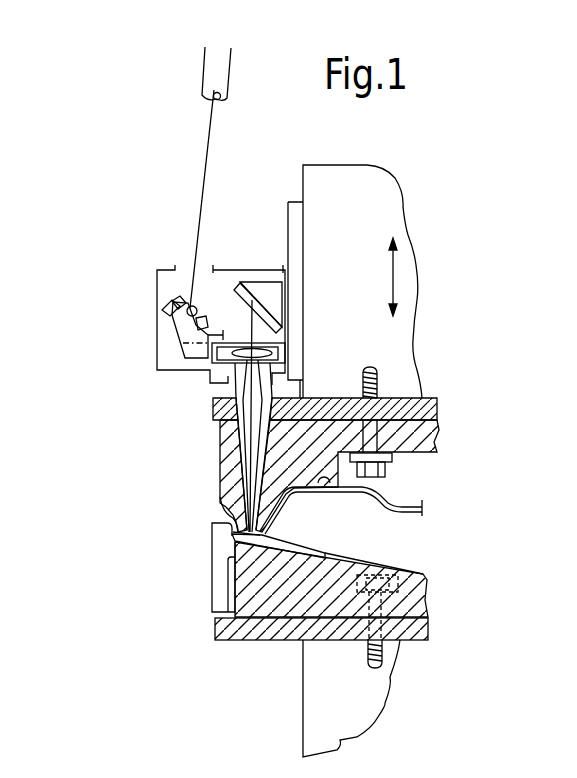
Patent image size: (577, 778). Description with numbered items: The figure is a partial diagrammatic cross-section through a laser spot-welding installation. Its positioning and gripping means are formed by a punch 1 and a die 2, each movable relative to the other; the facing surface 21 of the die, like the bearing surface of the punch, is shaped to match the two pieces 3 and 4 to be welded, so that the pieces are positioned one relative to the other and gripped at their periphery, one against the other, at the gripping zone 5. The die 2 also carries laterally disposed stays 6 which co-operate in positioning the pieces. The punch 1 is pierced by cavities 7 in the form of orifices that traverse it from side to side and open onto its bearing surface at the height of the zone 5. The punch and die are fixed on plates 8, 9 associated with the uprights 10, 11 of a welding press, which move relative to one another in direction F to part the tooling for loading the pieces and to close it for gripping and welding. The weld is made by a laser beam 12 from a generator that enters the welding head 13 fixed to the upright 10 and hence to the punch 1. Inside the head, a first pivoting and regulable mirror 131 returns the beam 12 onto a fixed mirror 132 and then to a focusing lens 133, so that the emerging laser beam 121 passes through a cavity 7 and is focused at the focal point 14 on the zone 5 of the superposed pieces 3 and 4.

The punch 1 is at (441, 432).
The die 2 is at (413, 597).
The facing surface of the die 21 is at (380, 548).
The piece to be welded 3 is at (397, 510).
The piece to be welded 4 is at (306, 526).
The gripping zone 5 is at (232, 541).
The stays 6 is at (221, 587).
The cavities 7 is at (223, 447).
The plate 8 is at (433, 398).
The plate 9 is at (243, 628).
The upright 10 is at (369, 207).
The upright 11 is at (357, 715).
The laser beam 12 is at (209, 56).
The emerging laser beam 121 is at (236, 393).
The welding head 13 is at (157, 335).
The pivoting mirror 131 is at (160, 314).
The fixed mirror 132 is at (256, 322).
The lens 133 is at (278, 345).
The focal point 14 is at (222, 498).